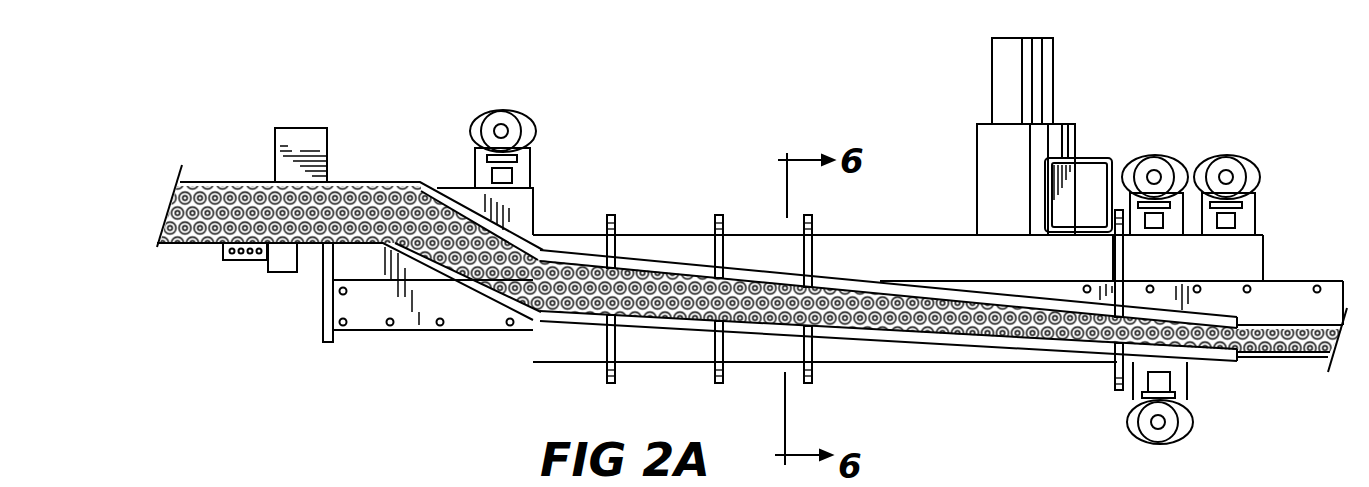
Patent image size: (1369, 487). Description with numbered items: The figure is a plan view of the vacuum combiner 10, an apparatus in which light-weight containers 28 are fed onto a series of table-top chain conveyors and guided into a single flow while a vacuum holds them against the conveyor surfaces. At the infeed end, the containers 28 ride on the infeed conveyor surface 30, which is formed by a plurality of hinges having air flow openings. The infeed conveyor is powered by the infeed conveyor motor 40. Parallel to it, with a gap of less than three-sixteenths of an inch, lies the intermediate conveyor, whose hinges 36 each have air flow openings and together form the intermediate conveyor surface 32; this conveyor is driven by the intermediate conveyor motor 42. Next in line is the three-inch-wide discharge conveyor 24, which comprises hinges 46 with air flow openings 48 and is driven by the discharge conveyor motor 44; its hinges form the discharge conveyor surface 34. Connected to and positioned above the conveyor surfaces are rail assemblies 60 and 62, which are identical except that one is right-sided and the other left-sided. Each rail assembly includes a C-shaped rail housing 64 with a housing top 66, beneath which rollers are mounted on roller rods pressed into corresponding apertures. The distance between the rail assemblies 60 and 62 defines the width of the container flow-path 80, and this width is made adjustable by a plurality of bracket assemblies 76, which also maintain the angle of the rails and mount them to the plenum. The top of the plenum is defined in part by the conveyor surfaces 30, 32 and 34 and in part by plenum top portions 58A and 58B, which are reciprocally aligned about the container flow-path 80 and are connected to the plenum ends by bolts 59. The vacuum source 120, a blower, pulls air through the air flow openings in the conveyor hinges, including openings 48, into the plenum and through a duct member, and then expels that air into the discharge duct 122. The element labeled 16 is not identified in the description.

The vacuum combiner 10 is at (757, 128).
The drive roller 16 is at (503, 125).
The discharge conveyor 24 is at (1327, 357).
The light-weight containers 28 is at (383, 196).
The infeed conveyor surface 30 is at (523, 237).
The intermediate conveyor surface 32 is at (568, 314).
The discharge conveyor surface 34 is at (1016, 332).
The hinges 36 is at (908, 332).
The infeed conveyor motor 40 is at (1158, 165).
The intermediate conveyor motor 42 is at (1225, 165).
The discharge conveyor motor 44 is at (1180, 418).
The hinges 46 is at (1272, 354).
The air flow openings 48 is at (1110, 344).
The plenum top portion 58A is at (473, 316).
The plenum top portion 58B is at (580, 242).
The bolts 59 is at (1250, 286).
The rail assembly 60 is at (670, 232).
The rail assembly 62 is at (868, 368).
The rail housing 64 is at (1047, 307).
The housing top 66 is at (1173, 318).
The bracket assembly 76 is at (613, 216).
The container flow-path 80 is at (857, 287).
The vacuum source 120 is at (983, 145).
The discharge duct 122 is at (1048, 65).